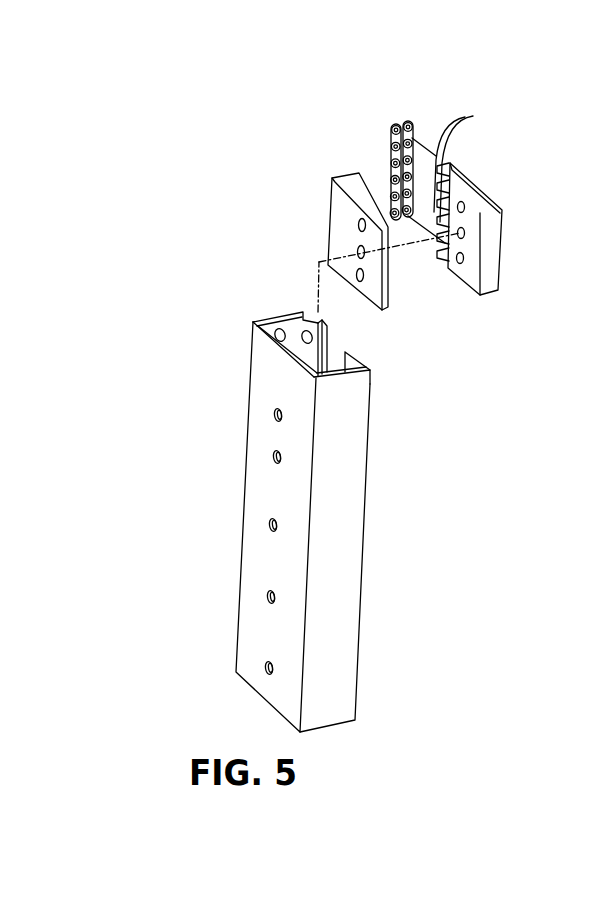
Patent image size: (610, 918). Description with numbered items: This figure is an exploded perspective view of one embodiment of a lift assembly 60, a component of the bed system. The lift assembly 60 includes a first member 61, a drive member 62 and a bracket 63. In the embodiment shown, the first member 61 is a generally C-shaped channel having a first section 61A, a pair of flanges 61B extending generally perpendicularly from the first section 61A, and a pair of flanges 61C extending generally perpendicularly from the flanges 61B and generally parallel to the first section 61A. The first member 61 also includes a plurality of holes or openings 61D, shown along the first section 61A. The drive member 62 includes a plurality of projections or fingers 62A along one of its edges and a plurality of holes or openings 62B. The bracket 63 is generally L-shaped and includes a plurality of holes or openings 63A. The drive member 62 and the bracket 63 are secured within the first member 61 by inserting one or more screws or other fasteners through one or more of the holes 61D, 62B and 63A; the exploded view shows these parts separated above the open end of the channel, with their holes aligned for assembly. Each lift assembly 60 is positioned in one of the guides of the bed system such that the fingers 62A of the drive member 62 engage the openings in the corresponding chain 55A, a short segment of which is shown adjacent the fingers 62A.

The lift assembly 60 is at (200, 488).
The first member 61 is at (390, 580).
The first section 61A is at (258, 556).
The flanges 61B is at (347, 528).
The flanges 61C is at (327, 345).
The holes or openings 61D is at (278, 525).
The drive member 62 is at (509, 172).
The projections or fingers 62A is at (477, 181).
The holes or openings 62B is at (466, 207).
The bracket 63 is at (335, 207).
The holes or openings 63A is at (362, 219).
The chain 55A is at (411, 126).